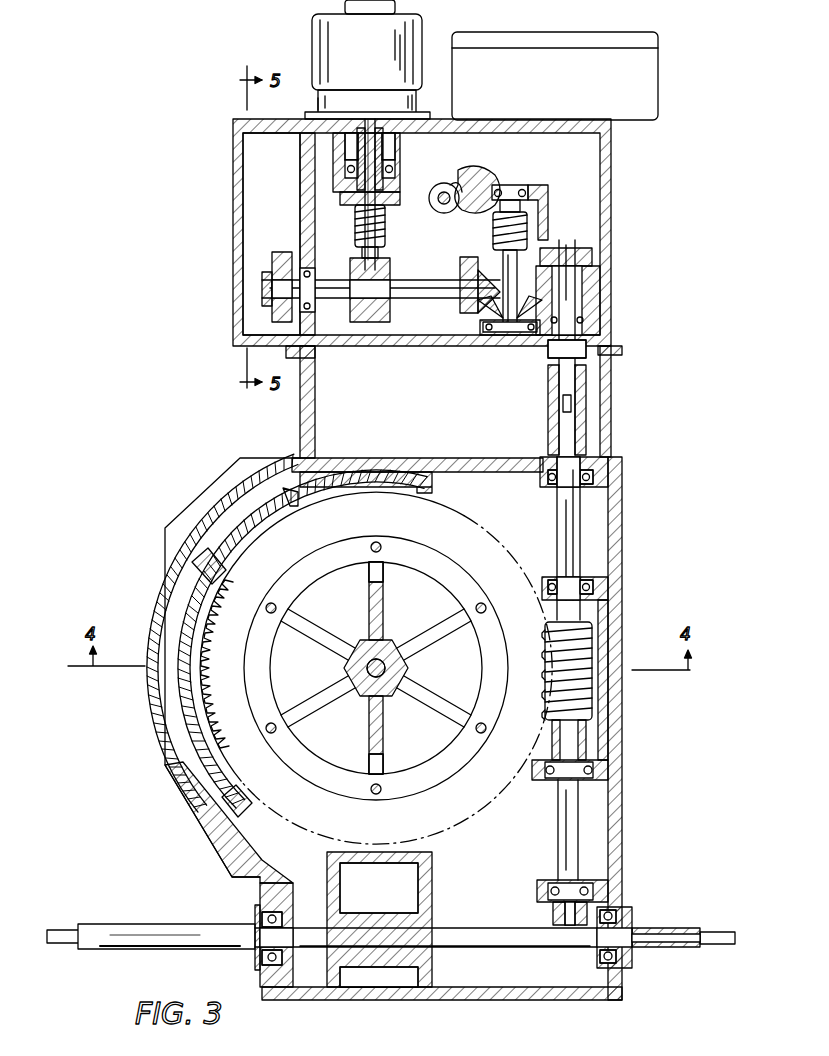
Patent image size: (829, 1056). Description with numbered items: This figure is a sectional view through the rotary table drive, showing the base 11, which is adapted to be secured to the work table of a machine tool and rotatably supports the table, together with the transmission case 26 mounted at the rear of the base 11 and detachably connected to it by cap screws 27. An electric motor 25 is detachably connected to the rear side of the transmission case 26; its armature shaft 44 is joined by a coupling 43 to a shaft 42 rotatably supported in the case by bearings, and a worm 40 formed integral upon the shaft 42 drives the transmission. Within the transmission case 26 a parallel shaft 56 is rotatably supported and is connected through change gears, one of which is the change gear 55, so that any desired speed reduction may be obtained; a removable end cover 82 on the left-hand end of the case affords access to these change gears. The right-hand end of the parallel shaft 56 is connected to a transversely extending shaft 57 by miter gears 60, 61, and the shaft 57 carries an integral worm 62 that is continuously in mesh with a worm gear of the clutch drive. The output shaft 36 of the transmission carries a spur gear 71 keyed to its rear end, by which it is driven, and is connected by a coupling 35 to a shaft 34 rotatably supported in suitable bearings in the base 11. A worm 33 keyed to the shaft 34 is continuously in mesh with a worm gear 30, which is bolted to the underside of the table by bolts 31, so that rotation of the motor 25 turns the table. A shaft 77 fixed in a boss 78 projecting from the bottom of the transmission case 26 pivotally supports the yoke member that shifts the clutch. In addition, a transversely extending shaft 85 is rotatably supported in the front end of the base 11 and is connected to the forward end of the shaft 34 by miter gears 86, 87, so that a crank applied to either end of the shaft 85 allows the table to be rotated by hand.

The electric motor 25 is at (312, 52).
The armature shaft 44 is at (372, 119).
The coupling 43 is at (395, 140).
The shaft 42 is at (360, 195).
The worm 40 is at (385, 226).
The shaft 77 is at (450, 182).
The boss 78 is at (472, 172).
The transversely extending shaft 57 is at (512, 185).
The transmission case 26 is at (608, 180).
The worm 62 is at (493, 228).
The miter gear 60 is at (486, 262).
The spur gear 71 is at (598, 258).
The change gear 55 is at (295, 252).
The removable end cover 82 is at (243, 282).
The parallel shaft 56 is at (392, 300).
The miter gear 61 is at (520, 300).
The output shaft 36 is at (556, 352).
The coupling 35 is at (548, 405).
The shaft 34 is at (555, 508).
The cap screws 27 is at (614, 360).
The worm gear 30 is at (488, 545).
The bolts 31 is at (485, 605).
The worm 33 is at (592, 640).
The base 11 is at (622, 806).
The transversely extending shaft 85 is at (185, 925).
The miter gear 86 is at (545, 912).
The miter gear 87 is at (592, 955).